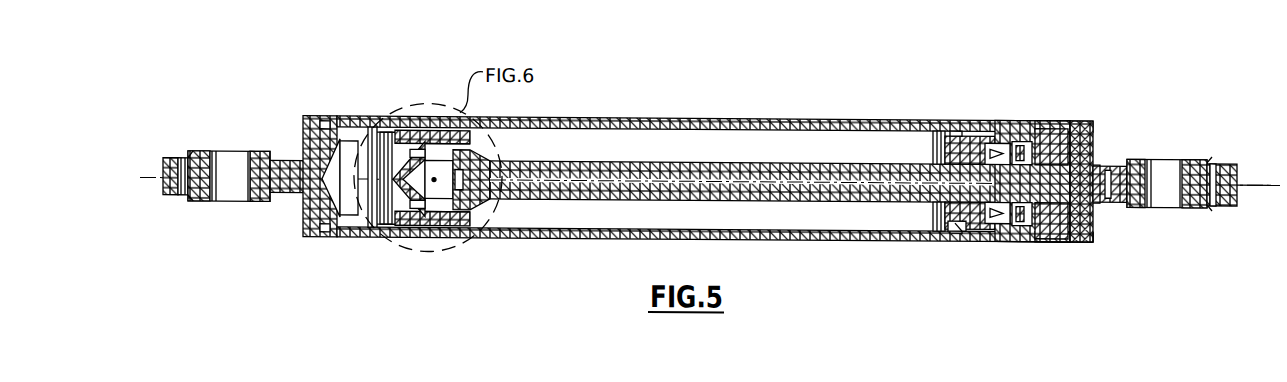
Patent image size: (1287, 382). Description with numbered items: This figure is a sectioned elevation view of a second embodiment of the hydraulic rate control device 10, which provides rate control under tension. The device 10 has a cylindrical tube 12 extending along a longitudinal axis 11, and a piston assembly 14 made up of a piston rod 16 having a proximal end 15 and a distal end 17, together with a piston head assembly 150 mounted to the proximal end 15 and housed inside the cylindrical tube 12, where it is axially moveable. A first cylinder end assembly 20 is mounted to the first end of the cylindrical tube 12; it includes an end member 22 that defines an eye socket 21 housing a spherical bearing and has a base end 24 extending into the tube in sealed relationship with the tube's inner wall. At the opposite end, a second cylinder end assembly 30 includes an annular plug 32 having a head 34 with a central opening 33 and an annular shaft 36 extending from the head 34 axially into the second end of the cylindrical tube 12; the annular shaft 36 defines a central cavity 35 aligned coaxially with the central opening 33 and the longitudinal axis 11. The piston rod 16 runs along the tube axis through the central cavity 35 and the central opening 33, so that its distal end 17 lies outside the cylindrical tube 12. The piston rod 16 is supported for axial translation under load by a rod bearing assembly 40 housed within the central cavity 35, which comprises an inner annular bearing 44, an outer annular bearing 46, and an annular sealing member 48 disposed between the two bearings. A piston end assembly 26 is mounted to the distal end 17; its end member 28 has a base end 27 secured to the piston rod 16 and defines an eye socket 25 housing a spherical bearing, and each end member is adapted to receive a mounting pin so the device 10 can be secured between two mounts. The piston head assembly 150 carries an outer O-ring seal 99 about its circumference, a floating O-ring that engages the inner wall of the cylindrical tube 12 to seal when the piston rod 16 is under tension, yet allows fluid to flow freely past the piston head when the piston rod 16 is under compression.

The hydraulic rate control device 10 is at (667, 109).
The longitudinal axis 11 is at (1250, 186).
The cylindrical tube 12 is at (740, 118).
The piston assembly 14 is at (475, 212).
The proximal end 15 is at (503, 240).
The piston rod 16 is at (637, 160).
The distal end 17 is at (1094, 216).
The first cylinder end assembly 20 is at (194, 131).
The eye socket 21 is at (230, 167).
The end member 22 is at (163, 160).
The base end 24 is at (302, 201).
The eye socket 25 is at (1158, 172).
The piston end assembly 26 is at (1175, 218).
The base end 27 is at (1097, 245).
The end member 28 is at (1225, 210).
The second cylinder end assembly 30 is at (1013, 189).
The annular plug 32 is at (1055, 246).
The central opening 33 is at (1088, 146).
The head 34 is at (1075, 246).
The central cavity 35 is at (1003, 135).
The annular shaft 36 is at (963, 125).
The rod bearing assembly 40 is at (963, 230).
The inner annular bearing 44 is at (1000, 127).
The outer annular bearing 46 is at (1058, 127).
The annular sealing member 48 is at (1033, 137).
The outer O-ring seal 99 is at (415, 240).
The piston head assembly 150 is at (467, 243).